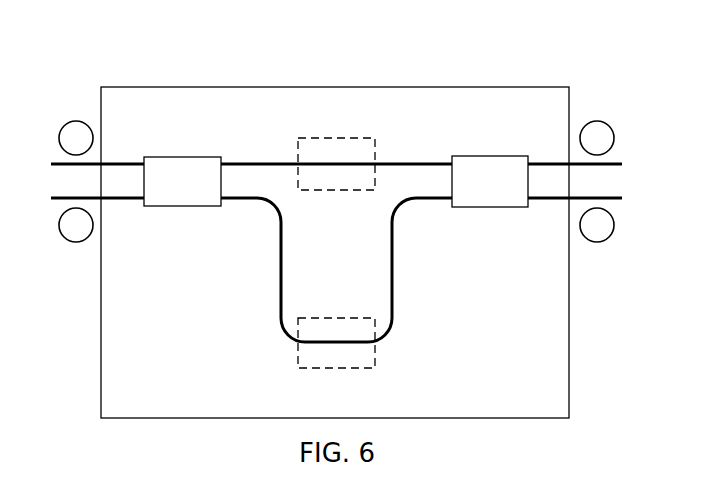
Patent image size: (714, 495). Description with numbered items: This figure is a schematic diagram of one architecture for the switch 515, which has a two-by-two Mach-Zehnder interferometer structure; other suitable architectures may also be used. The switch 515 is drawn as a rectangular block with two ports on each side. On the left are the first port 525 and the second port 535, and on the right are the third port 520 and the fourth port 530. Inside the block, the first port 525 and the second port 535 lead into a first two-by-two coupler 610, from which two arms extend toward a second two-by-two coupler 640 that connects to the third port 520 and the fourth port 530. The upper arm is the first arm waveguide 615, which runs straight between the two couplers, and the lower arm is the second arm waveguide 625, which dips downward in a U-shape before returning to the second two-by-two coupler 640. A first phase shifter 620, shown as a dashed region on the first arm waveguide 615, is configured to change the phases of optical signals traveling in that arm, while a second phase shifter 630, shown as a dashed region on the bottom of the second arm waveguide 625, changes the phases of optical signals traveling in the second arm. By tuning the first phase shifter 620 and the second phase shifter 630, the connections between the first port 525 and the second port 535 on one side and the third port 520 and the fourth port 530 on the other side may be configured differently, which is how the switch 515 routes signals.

The switch 515 is at (247, 70).
The third port 520 is at (598, 120).
The first port 525 is at (75, 120).
The fourth port 530 is at (598, 243).
The second port 535 is at (75, 243).
The first 2×2 coupler 610 is at (182, 156).
The first arm waveguide 615 is at (261, 162).
The first phase shifter 620 is at (347, 137).
The second arm waveguide 625 is at (279, 283).
The second phase shifter 630 is at (350, 369).
The second 2×2 coupler 640 is at (491, 155).